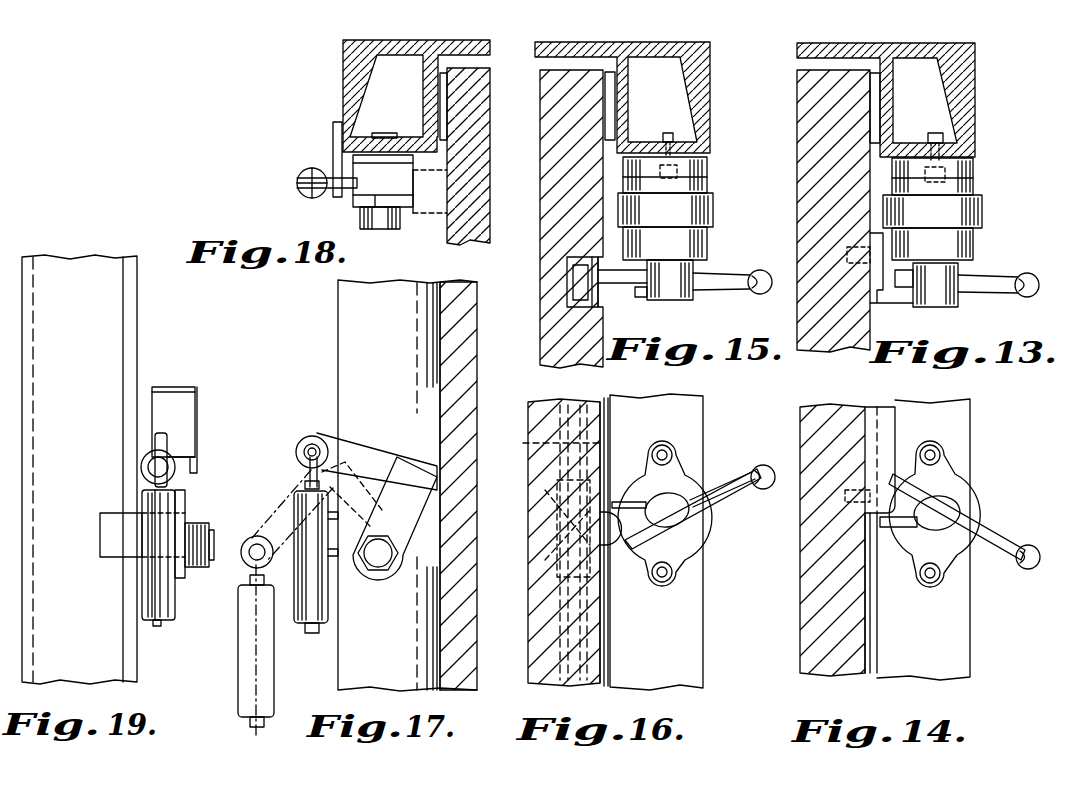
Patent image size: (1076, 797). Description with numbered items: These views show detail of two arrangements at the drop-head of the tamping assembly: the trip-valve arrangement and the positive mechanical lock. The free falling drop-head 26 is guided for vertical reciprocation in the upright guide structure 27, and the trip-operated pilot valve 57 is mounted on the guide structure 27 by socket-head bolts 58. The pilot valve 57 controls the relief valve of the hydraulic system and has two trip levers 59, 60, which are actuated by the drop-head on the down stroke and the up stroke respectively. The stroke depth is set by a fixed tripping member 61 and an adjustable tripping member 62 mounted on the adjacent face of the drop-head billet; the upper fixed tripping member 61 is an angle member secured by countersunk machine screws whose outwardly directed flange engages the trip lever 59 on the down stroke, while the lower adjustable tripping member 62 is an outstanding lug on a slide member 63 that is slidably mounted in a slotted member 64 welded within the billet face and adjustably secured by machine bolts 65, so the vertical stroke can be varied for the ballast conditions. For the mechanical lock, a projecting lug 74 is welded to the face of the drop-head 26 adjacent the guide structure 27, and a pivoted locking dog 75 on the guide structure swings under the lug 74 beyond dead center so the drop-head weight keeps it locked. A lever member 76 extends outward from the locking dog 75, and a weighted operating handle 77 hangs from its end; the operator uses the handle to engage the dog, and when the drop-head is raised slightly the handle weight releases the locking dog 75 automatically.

In FIG. 18, the drop-head 26 is at (481, 117).
In FIG. 15, the drop-head 26 is at (545, 258).
In FIG. 13, the drop-head 26 is at (806, 175).
In FIG. 17, the drop-head 26 is at (458, 486).
In FIG. 16, the drop-head 26 is at (541, 638).
In FIG. 14, the drop-head 26 is at (811, 570).
In FIG. 18, the guide structure 27 is at (349, 66).
In FIG. 15, the guide structure 27 is at (713, 86).
In FIG. 13, the guide structure 27 is at (969, 92).
In FIG. 17, the guide structure 27 is at (351, 318).
In FIG. 16, the guide structure 27 is at (691, 430).
In FIG. 14, the guide structure 27 is at (968, 620).
In FIG. 15, the pilot valve 57 is at (713, 210).
In FIG. 13, the pilot valve 57 is at (984, 219).
In FIG. 16, the pilot valve 57 is at (710, 515).
In FIG. 14, the pilot valve 57 is at (980, 507).
In FIG. 15, the socket-head bolts 58 is at (668, 133).
In FIG. 13, the socket-head bolts 58 is at (936, 133).
In FIG. 16, the socket-head bolts 58 is at (662, 583).
In FIG. 14, the socket-head bolts 58 is at (941, 455).
In FIG. 15, the trip lever 59 is at (657, 296).
In FIG. 13, the trip lever 59 is at (919, 304).
In FIG. 16, the trip lever 59 is at (638, 537).
In FIG. 14, the trip lever 59 is at (897, 527).
In FIG. 15, the trip lever 60 is at (638, 283).
In FIG. 13, the trip lever 60 is at (906, 270).
In FIG. 16, the trip lever 60 is at (641, 500).
In FIG. 14, the trip lever 60 is at (918, 497).
In FIG. 14, the fixed tripping member 61 is at (892, 447).
In FIG. 16, the adjustable tripping member 62 is at (610, 540).
In FIG. 15, the slide member 63 is at (596, 262).
In FIG. 16, the slide member 63 is at (607, 598).
In FIG. 15, the slotted member 64 is at (573, 310).
In FIG. 16, the slotted member 64 is at (550, 441).
In FIG. 16, the machine bolts 65 is at (548, 537).
In FIG. 18, the projecting lug 74 is at (432, 193).
In FIG. 19, the projecting lug 74 is at (168, 400).
In FIG. 17, the projecting lug 74 is at (415, 433).
In FIG. 18, the locking dog 75 is at (386, 199).
In FIG. 19, the locking dog 75 is at (186, 503).
In FIG. 17, the locking dog 75 is at (408, 473).
In FIG. 18, the lever member 76 is at (339, 196).
In FIG. 19, the lever member 76 is at (172, 450).
In FIG. 17, the lever member 76 is at (332, 442).
In FIG. 18, the weighted operating handle 77 is at (309, 171).
In FIG. 19, the weighted operating handle 77 is at (159, 606).
In FIG. 17, the weighted operating handle 77 is at (292, 583).